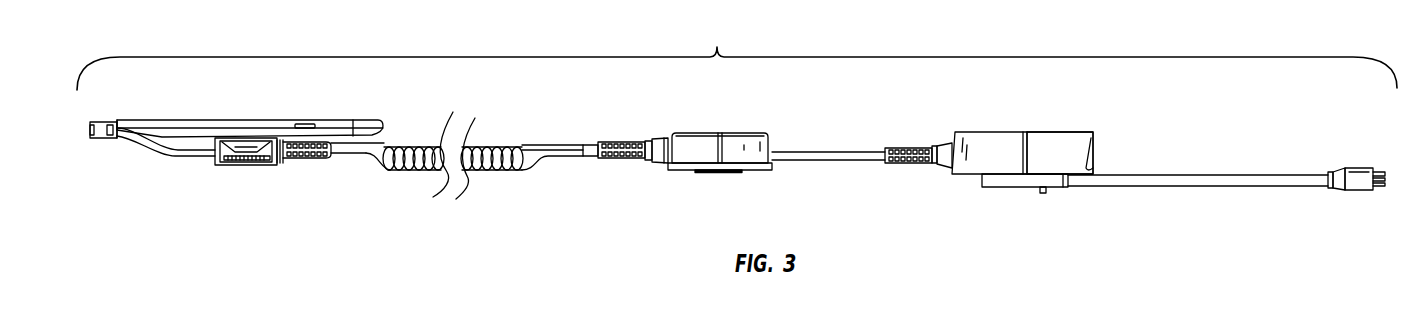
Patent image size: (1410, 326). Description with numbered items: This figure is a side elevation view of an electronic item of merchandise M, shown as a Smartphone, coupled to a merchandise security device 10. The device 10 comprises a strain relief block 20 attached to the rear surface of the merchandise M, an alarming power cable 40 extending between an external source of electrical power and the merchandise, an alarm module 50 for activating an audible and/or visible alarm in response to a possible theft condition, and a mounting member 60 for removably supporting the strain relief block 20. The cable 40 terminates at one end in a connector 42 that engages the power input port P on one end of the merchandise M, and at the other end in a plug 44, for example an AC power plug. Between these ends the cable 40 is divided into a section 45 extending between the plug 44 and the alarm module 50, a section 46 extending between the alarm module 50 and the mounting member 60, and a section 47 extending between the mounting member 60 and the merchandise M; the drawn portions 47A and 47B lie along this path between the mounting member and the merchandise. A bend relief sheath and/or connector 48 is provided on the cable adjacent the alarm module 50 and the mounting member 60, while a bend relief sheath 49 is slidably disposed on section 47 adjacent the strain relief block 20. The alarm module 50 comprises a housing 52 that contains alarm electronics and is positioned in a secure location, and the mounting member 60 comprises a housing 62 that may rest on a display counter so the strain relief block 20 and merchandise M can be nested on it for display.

The merchandise security device 10 is at (737, 53).
The power input port P is at (117, 121).
The electronic item of merchandise M is at (163, 120).
The connector 42 is at (96, 140).
The cable segment 47B is at (178, 156).
The strain relief block 20 is at (254, 176).
The bend relief sheath 49 is at (305, 158).
The alarming power cable 40 is at (418, 108).
The coiled cable segment 47A is at (409, 172).
The section 47 is at (457, 158).
The bend relief sheath and/or connector 48 is at (620, 142).
The housing 62 is at (700, 143).
The mounting member 60 is at (688, 157).
The section 46 is at (830, 142).
The alarm module 50 is at (1030, 131).
The housing 52 is at (1065, 145).
The section 45 is at (1219, 165).
The plug 44 is at (1357, 180).